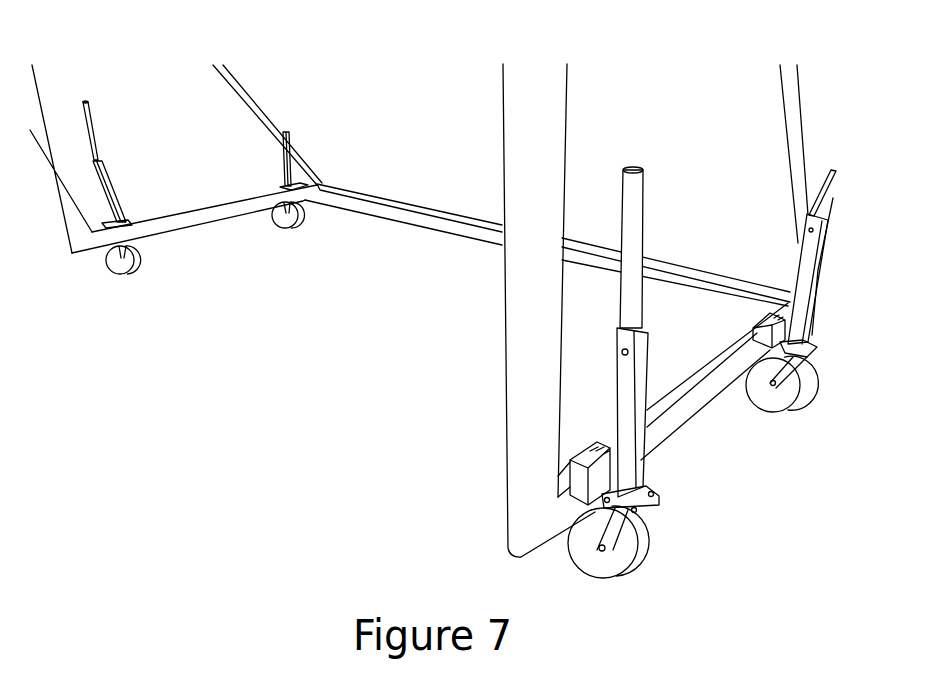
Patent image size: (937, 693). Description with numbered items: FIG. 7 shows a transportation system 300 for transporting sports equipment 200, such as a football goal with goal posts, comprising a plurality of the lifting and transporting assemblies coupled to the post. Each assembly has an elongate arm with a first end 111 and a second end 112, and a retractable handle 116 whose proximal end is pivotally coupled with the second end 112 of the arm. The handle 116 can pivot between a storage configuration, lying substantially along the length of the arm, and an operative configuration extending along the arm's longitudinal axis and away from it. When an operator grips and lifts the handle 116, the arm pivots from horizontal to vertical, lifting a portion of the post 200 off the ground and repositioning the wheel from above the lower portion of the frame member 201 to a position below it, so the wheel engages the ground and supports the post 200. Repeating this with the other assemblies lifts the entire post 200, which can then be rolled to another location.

The retractable handle 116 is at (87, 120).
The second end 112 is at (661, 325).
The first end 111 is at (657, 476).
The sports equipment 200 is at (356, 222).
The frame member 201 is at (712, 388).
The transportation system 300 is at (160, 488).